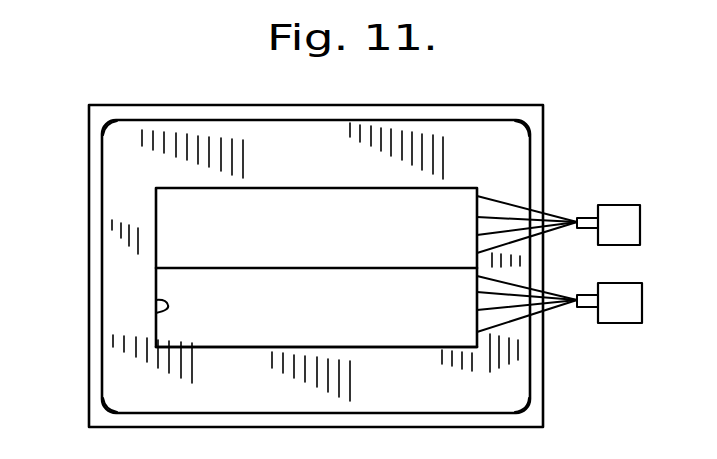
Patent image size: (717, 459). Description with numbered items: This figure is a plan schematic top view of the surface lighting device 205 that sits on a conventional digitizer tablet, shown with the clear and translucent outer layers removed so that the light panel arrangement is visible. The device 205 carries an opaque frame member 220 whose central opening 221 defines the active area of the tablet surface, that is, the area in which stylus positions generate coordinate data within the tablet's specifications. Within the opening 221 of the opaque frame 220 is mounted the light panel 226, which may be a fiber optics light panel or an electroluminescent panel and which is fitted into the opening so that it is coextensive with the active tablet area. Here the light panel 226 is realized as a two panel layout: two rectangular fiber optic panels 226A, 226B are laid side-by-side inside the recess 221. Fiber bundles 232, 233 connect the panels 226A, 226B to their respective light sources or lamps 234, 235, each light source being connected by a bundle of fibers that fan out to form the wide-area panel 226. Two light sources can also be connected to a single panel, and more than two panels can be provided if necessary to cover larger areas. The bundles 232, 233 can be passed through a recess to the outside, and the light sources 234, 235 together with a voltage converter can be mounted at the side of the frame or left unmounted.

The device for surface lighting 205 is at (523, 95).
The opaque frame member 220 is at (110, 291).
The central opening 221 is at (157, 312).
The light panel 226 is at (224, 188).
The rectangular fiber optic panel 226A is at (355, 323).
The rectangular fiber optic panel 226B is at (355, 243).
The fiber bundle 232 is at (536, 232).
The fiber bundle 233 is at (548, 306).
The light source 234 is at (677, 187).
The light source 235 is at (633, 313).